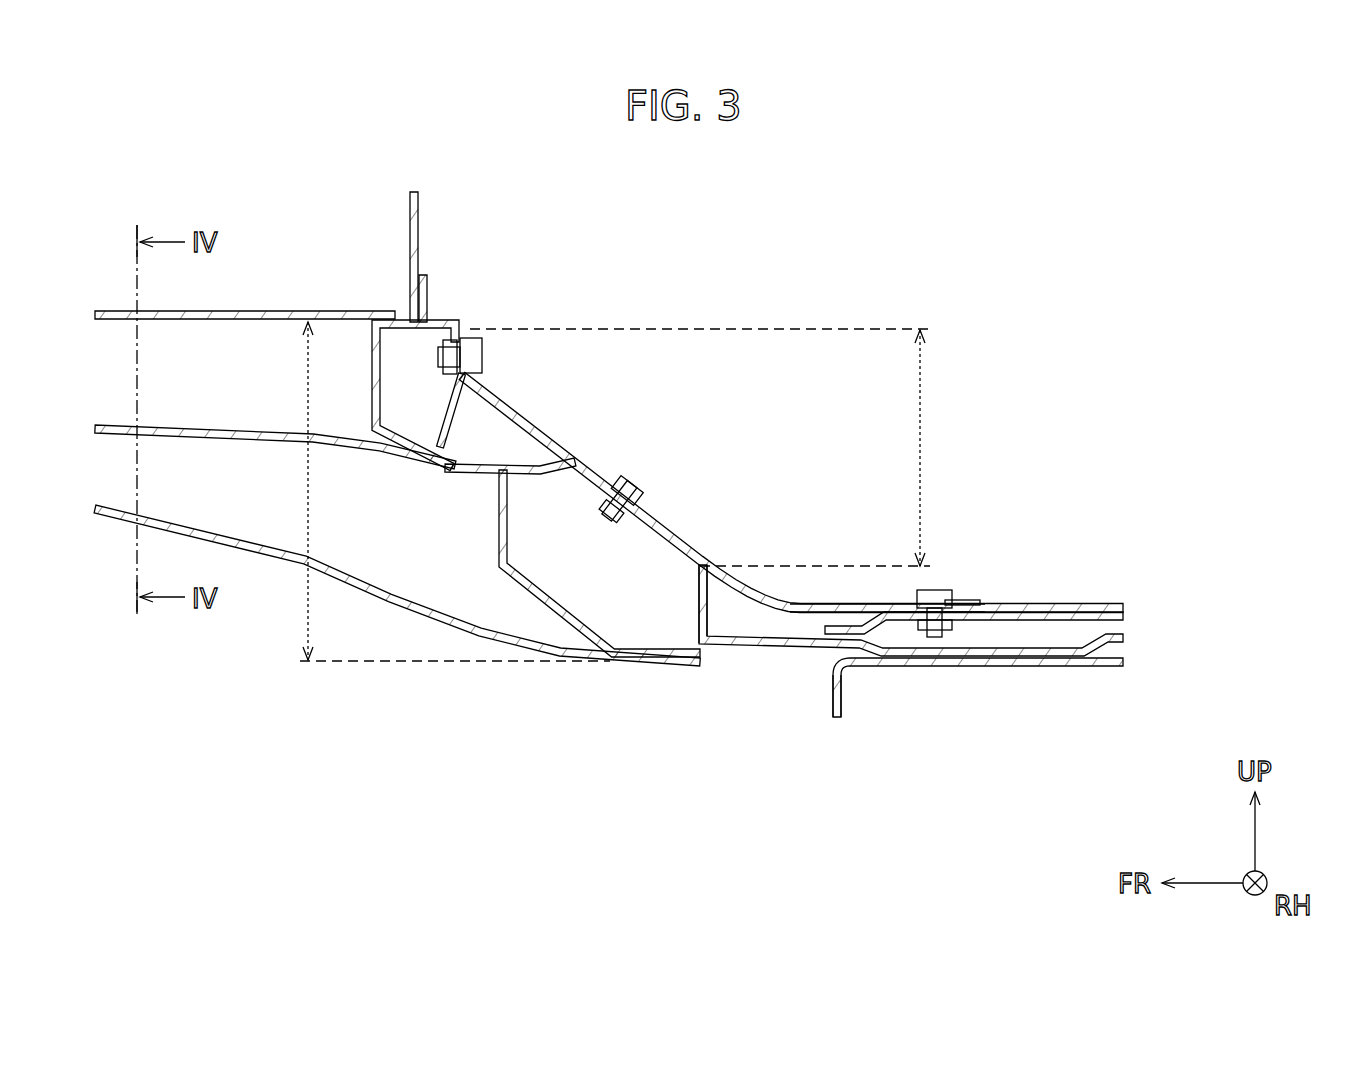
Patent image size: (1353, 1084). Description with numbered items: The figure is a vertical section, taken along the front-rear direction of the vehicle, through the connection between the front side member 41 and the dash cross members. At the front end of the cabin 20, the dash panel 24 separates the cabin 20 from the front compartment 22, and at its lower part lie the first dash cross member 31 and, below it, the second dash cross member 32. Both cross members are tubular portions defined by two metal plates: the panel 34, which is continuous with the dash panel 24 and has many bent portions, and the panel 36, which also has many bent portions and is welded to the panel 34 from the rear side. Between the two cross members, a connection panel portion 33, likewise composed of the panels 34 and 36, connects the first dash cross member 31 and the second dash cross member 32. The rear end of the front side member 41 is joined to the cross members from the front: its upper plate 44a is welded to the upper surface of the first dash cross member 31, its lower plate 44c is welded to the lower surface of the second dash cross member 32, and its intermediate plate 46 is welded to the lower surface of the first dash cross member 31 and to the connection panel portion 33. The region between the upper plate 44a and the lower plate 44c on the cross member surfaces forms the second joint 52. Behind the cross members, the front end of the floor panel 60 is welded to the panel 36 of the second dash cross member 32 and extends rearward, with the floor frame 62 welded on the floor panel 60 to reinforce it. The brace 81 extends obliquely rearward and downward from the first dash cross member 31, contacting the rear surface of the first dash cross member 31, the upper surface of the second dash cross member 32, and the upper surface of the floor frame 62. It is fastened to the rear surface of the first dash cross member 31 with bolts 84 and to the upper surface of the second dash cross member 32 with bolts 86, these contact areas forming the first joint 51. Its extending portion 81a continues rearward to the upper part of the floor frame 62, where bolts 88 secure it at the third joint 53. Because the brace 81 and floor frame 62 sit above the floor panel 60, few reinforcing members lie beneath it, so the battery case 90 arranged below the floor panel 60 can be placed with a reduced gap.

The cabin 20 is at (1052, 253).
The front compartment 22 is at (228, 208).
The dash panel 24 is at (410, 213).
The first dash cross member 31 is at (455, 293).
The second dash cross member 32 is at (735, 600).
The connection panel portion 33 is at (485, 455).
The panel 34 is at (495, 515).
The panel 36 is at (717, 615).
The front side member 41 is at (272, 568).
The upper plate 44a is at (257, 310).
The lower plate 44c is at (262, 540).
The intermediate plate 46 is at (197, 437).
The first joint 51 is at (921, 442).
The second joint 52 is at (305, 378).
The third joint 53 is at (975, 603).
The floor panel 60 is at (1025, 665).
The floor frame 62 is at (1105, 608).
The brace 81 is at (500, 400).
The extending portion 81a is at (890, 600).
The bolts 84 is at (485, 355).
The bolts 86 is at (640, 490).
The bolts 88 is at (945, 595).
The battery case 90 is at (833, 690).